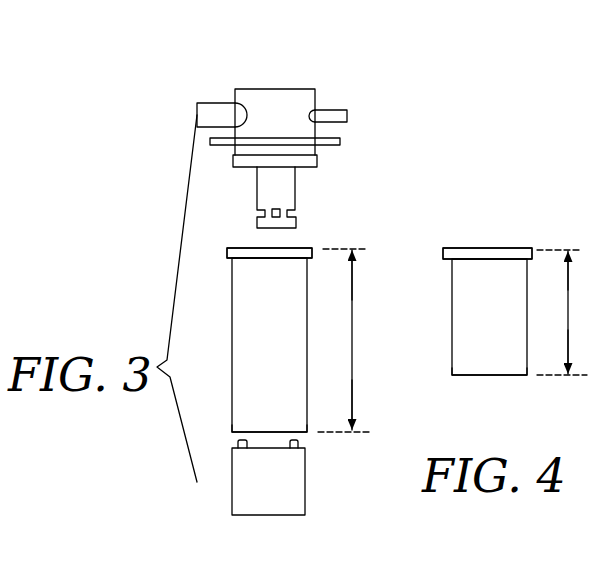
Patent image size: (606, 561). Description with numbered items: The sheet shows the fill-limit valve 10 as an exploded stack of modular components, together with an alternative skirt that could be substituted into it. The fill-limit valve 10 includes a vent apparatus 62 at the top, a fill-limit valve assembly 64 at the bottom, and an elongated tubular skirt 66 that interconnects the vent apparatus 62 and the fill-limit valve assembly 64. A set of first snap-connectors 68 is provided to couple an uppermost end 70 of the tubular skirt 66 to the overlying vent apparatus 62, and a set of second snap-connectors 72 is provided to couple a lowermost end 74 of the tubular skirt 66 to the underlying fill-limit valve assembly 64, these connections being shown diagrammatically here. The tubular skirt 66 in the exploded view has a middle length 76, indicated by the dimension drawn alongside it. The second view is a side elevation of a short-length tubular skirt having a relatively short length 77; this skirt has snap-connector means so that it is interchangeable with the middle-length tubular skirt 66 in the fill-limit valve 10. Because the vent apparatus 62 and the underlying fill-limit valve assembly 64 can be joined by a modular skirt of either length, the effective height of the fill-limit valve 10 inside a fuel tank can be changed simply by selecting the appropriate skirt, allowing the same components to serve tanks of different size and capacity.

In FIG. 3, the fill-limit valve 10 is at (384, 142).
In FIG. 3, the vent apparatus 62 is at (326, 86).
In FIG. 3, the fill-limit valve assembly 64 is at (313, 496).
In FIG. 3, the elongated tubular skirt 66 is at (222, 357).
In FIG. 4, the elongated tubular skirt 66 is at (440, 320).
In FIG. 3, the first snap-connectors 68 is at (309, 237).
In FIG. 4, the first snap-connectors 68 is at (531, 235).
In FIG. 3, the uppermost end 70 is at (227, 248).
In FIG. 4, the uppermost end 70 is at (445, 247).
In FIG. 3, the second snap-connectors 72 is at (305, 442).
In FIG. 3, the lowermost end 74 is at (231, 423).
In FIG. 4, the lowermost end 74 is at (452, 366).
In FIG. 3, the middle length 76 is at (344, 340).
In FIG. 4, the short length 77 is at (562, 312).